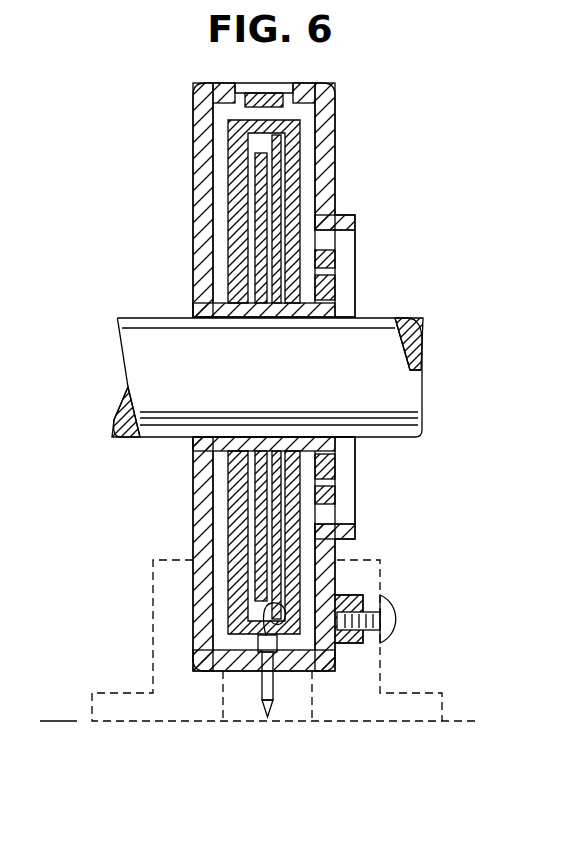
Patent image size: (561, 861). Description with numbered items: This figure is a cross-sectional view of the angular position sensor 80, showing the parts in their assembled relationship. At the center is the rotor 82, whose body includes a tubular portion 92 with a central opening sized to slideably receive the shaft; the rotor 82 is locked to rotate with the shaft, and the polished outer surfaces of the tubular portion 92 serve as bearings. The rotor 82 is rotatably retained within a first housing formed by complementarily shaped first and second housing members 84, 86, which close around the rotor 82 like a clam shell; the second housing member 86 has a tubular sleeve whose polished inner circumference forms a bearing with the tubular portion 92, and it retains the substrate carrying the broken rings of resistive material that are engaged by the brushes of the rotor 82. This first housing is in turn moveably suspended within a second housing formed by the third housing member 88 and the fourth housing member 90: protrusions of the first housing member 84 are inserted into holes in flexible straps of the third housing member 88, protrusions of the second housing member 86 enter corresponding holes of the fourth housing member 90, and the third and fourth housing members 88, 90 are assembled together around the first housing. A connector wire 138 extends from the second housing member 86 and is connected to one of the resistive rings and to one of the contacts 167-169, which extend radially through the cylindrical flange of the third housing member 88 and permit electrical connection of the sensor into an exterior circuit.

The angular position sensor 80 is at (130, 217).
The rotor 82 is at (238, 577).
The first housing member 84 is at (220, 124).
The second housing member 86 is at (305, 127).
The third housing member 88 is at (185, 627).
The fourth housing member 90 is at (342, 154).
The tubular portion 92 is at (305, 303).
The connector wire 138 is at (262, 610).
The contacts 167-169 is at (275, 690).